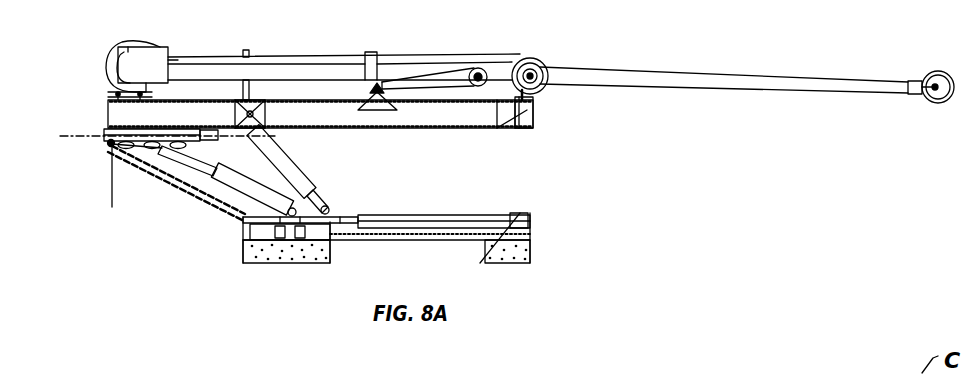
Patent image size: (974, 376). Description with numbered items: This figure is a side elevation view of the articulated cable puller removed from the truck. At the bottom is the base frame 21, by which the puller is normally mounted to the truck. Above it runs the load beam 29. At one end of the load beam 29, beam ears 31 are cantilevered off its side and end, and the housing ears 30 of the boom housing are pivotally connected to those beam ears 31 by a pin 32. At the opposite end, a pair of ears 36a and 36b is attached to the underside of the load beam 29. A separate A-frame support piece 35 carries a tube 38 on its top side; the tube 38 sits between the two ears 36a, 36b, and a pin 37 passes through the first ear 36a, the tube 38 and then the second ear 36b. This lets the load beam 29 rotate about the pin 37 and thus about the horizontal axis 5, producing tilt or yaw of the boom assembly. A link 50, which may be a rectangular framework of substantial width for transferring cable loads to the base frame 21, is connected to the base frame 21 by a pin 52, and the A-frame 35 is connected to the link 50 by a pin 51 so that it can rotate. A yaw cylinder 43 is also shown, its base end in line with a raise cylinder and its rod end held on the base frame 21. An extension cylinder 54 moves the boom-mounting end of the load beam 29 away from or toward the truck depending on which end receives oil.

The horizontal axis 5 is at (66, 138).
The base frame 21 is at (344, 220).
The load beam 29 is at (412, 115).
The housing ears 30 is at (541, 88).
The beam ears 31 is at (517, 128).
The pin 32 is at (535, 103).
The A-frame support piece 35 is at (172, 184).
The first ear 36a is at (107, 146).
The second ear 36b is at (215, 136).
The pin 37 is at (106, 128).
The tube 38 is at (182, 130).
The yaw cylinder 43 is at (318, 181).
The link 50 is at (192, 197).
The pin 51 is at (112, 207).
The pin 52 is at (243, 218).
The extension cylinder 54 is at (290, 160).